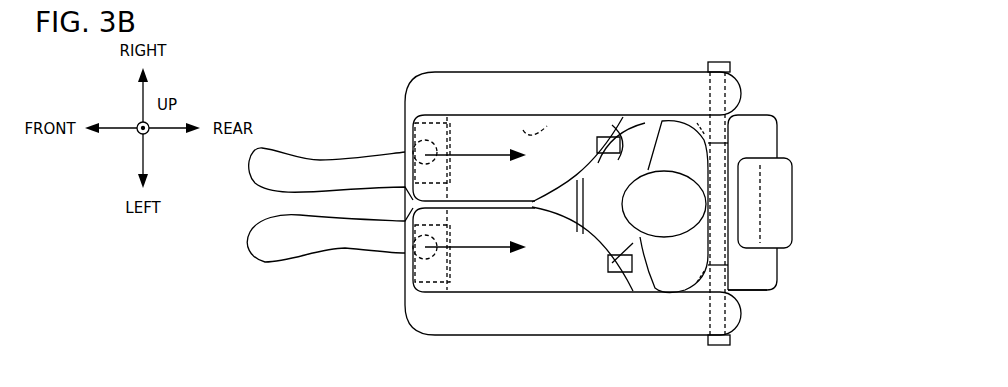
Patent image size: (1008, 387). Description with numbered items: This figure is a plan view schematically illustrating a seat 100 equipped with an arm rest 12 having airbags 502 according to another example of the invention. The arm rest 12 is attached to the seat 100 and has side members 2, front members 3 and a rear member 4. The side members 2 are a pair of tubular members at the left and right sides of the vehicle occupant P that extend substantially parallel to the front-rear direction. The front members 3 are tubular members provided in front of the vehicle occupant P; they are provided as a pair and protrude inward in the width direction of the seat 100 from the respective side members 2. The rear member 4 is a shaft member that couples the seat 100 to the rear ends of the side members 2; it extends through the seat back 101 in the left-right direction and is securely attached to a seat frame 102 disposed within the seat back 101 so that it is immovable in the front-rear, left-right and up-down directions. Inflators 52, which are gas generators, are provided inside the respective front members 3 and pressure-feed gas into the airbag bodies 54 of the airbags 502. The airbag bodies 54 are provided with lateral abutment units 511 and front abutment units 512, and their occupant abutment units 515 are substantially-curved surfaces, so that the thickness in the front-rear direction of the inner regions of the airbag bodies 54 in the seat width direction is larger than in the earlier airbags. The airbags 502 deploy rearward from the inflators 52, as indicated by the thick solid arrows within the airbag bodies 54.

The arm rest 12 is at (416, 68).
The side members 2 is at (666, 78).
The front members 3 is at (404, 284).
The rear member 4 is at (736, 86).
The airbags 502 is at (409, 163).
The inflators 52 is at (414, 148).
The airbag bodies 54 is at (434, 129).
The lateral abutment units 511 is at (523, 130).
The front abutment units 512 is at (445, 135).
The occupant abutment units 515 is at (614, 140).
The seat 100 is at (818, 206).
The seat back 101 is at (760, 140).
The seat frame 102 is at (700, 300).
The vehicle occupant P is at (637, 243).